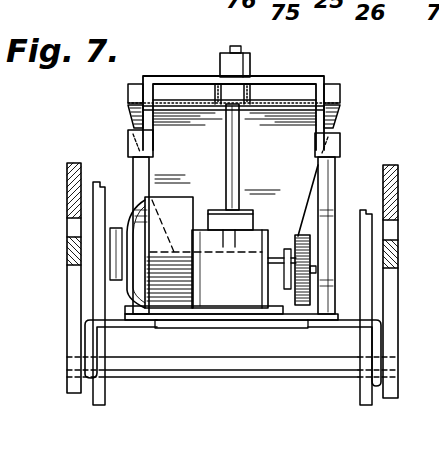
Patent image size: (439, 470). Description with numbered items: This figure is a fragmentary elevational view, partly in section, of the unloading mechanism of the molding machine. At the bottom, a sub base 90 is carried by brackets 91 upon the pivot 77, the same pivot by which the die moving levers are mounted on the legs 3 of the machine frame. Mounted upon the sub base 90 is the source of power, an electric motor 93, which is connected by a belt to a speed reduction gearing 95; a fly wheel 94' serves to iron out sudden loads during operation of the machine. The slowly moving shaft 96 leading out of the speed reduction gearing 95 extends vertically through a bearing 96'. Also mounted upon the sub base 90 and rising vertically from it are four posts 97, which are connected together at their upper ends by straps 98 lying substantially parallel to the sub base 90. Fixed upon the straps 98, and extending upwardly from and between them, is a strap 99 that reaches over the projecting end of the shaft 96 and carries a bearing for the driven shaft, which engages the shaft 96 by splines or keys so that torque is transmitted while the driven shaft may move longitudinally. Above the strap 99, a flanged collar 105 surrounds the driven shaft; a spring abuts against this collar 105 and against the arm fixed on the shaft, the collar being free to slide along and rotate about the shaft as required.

The leg 3 is at (75, 308).
The pivot 77 is at (237, 372).
The sub base 90 is at (229, 320).
The brackets 91 is at (83, 340).
The electric motor 93 is at (179, 204).
The fly wheel 94' is at (288, 232).
The speed reduction gearing 95 is at (217, 282).
The shaft 96 is at (210, 210).
The bearing 96' is at (209, 264).
The posts 97 is at (327, 203).
The straps 98 is at (128, 145).
The strap 99 is at (310, 78).
The flanged collar 105 is at (250, 64).